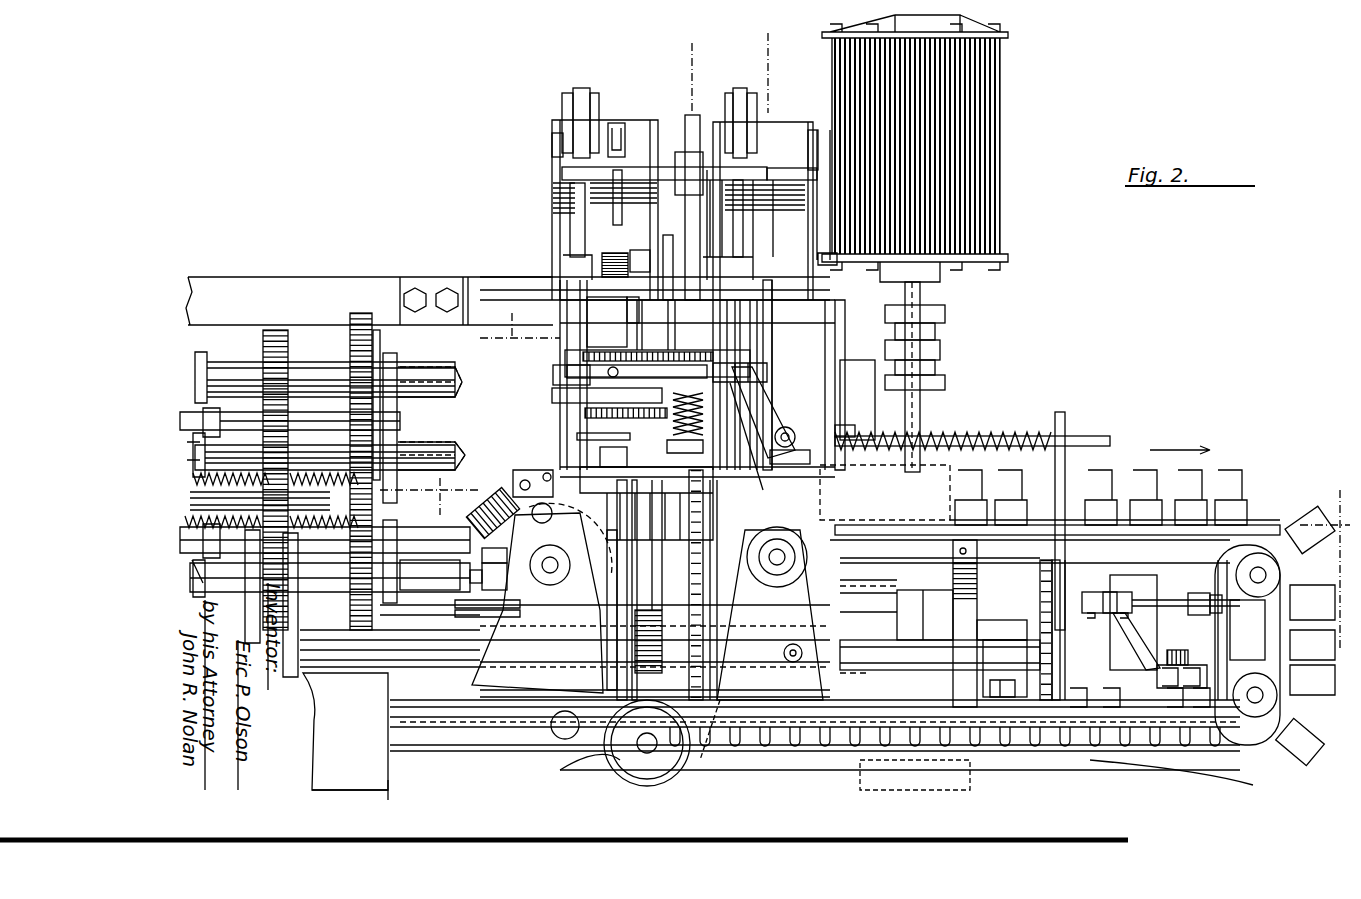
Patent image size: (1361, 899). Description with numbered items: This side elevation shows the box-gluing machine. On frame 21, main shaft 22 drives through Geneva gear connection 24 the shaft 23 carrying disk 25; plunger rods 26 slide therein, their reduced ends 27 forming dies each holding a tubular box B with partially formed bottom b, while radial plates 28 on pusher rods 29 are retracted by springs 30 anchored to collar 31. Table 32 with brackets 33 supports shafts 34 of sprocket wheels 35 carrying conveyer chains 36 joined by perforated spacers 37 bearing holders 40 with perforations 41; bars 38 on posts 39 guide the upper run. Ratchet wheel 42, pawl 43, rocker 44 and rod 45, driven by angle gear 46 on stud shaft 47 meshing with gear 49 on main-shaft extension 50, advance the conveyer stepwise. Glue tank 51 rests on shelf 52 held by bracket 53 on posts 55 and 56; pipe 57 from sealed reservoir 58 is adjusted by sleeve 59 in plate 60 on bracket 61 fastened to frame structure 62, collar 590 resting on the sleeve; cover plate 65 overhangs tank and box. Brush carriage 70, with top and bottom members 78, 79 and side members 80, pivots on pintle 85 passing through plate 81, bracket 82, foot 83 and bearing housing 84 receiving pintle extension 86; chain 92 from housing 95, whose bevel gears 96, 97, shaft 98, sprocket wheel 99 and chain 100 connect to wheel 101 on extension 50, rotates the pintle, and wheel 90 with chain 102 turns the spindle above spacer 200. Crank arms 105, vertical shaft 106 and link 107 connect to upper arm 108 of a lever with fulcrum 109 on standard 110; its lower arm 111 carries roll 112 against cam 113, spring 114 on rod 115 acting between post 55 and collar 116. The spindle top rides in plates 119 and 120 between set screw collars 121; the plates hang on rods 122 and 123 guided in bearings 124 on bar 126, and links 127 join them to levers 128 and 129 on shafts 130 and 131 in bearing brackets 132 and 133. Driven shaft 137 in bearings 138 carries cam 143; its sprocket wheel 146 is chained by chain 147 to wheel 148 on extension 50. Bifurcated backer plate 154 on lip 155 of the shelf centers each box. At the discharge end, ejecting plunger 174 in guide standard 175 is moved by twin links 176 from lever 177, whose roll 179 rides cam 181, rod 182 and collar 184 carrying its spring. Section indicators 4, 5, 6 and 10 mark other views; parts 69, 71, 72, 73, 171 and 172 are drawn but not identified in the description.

The section line 4 is at (512, 330).
The section line 5 is at (785, 46).
The section line 6 is at (713, 50).
The section line 10 is at (1336, 522).
The base 21 is at (390, 783).
The frame column 22 is at (345, 660).
The shaft 23 is at (380, 490).
The gear 24 is at (280, 330).
The shaft 25 is at (330, 640).
The shaft 26 is at (240, 362).
The shaft 27 is at (410, 570).
The gear plate 28 is at (390, 350).
The shaft 29 is at (303, 411).
The shaft 30 is at (298, 492).
The knob 31 is at (205, 452).
The frame 32 is at (488, 700).
The turret housing 33 is at (480, 700).
The chain 34 is at (545, 735).
The sprocket 35 is at (1268, 548).
The conveyor 36 is at (1080, 745).
The bar 37 is at (1185, 525).
The block 38 is at (984, 549).
The bracket 39 is at (978, 572).
The guide 40 is at (480, 685).
The bar 41 is at (498, 596).
The block 42 is at (495, 548).
The gear 43 is at (545, 560).
The block 44 is at (480, 515).
The bar 45 is at (498, 608).
The gear 46 is at (612, 785).
The gear 47 is at (665, 780).
The screw 49 is at (648, 612).
The shaft 50 is at (940, 655).
The block 51 is at (935, 470).
The block 52 is at (1015, 475).
The plate 53 is at (1055, 500).
The bar 55 is at (1068, 435).
The arm 56 is at (760, 500).
The shaft 57 is at (945, 290).
The motor 58 is at (985, 68).
The disc 59 is at (945, 314).
The disc 60 is at (940, 350).
The bracket 61 is at (842, 398).
The beam 62 is at (215, 285).
The gearbox 65 is at (646, 503).
The centerline 69 is at (690, 115).
The block 70 is at (607, 322).
The pivot 71 is at (792, 429).
The rod 72 is at (735, 395).
The cup 73 is at (703, 447).
The post 78 is at (667, 300).
The spring 79 is at (705, 416).
The block 80 is at (640, 335).
The knurled nut 81 is at (608, 253).
The rod 82 is at (567, 372).
The bar 83 is at (552, 395).
The bar 84 is at (577, 436).
The nut 85 is at (638, 252).
The block 86 is at (610, 452).
The bar 90 is at (565, 360).
The rack 92 is at (585, 412).
The link 95 is at (730, 760).
The column 96 is at (632, 590).
The chain 97 is at (684, 585).
The arm 98 is at (750, 520).
The block 99 is at (790, 456).
The gear 100 is at (805, 552).
The gear 101 is at (675, 760).
The toothed bar 102 is at (650, 352).
The base plate 105 is at (556, 290).
The base 106 is at (552, 277).
The nut 107 is at (767, 372).
The arm 108 is at (770, 395).
The arm 109 is at (810, 530).
The rod 110 is at (830, 585).
The rod 111 is at (830, 598).
The rod 112 is at (840, 683).
The rod 113 is at (825, 614).
The post 114 is at (1058, 430).
The bar 115 is at (1105, 436).
The block 116 is at (845, 430).
The bar 119 is at (817, 176).
The bar 120 is at (562, 172).
The column 121 is at (685, 150).
The shaft 122 is at (747, 214).
The rod 123 is at (552, 215).
The plate 124 is at (830, 300).
The plate 126 is at (830, 286).
The post 127 is at (562, 95).
The post 128 is at (740, 88).
The post 129 is at (575, 88).
The rod 130 is at (830, 148).
The bolt 131 is at (552, 140).
The plate 132 is at (813, 195).
The block 133 is at (560, 195).
The block 137 is at (998, 618).
The block 138 is at (375, 690).
The link 143 is at (565, 745).
The chain 146 is at (1052, 565).
The bracket 147 is at (1035, 650).
The bracket 148 is at (1045, 705).
The arm 154 is at (553, 470).
The block 155 is at (525, 470).
The rod 171 is at (618, 235).
The post 172 is at (616, 123).
The block 174 is at (1195, 615).
The rod 175 is at (1210, 598).
The block 176 is at (1105, 592).
The arm 177 is at (1128, 658).
The block 179 is at (1182, 658).
The frame 181 is at (1130, 590).
The guide 182 is at (1275, 740).
The bracket 184 is at (1195, 680).
The plate 200 is at (740, 310).
The shaft 590 is at (893, 282).
The bottle B is at (1298, 425).
The bottle tip b is at (480, 330).